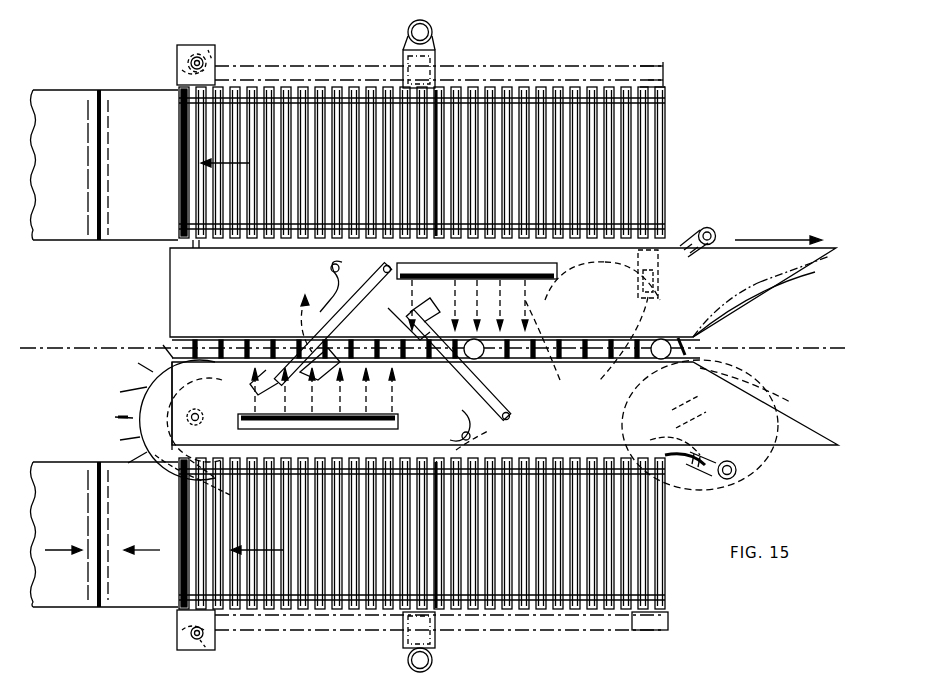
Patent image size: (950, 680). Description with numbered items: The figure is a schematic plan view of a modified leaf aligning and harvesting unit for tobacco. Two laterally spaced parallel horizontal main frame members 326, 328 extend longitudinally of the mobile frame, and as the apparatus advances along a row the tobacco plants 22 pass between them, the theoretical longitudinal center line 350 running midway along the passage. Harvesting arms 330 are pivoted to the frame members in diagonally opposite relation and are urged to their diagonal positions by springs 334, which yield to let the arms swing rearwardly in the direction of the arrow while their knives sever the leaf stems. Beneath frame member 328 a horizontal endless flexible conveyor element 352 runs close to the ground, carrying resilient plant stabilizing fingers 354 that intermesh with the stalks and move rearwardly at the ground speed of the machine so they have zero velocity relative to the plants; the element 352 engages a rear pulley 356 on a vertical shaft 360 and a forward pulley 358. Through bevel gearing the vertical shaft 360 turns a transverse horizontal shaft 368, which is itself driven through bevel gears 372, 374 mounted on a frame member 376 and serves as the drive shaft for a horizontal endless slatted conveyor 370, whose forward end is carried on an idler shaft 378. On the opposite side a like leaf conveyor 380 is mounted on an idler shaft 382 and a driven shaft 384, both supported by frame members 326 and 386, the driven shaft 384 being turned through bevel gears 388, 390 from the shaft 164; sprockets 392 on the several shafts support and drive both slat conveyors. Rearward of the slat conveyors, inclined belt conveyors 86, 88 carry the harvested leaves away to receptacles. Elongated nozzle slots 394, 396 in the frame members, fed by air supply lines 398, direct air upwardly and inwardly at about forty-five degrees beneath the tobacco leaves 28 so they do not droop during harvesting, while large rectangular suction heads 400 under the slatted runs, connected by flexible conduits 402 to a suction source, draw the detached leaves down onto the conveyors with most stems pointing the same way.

The tobacco plants 22 is at (700, 356).
The tobacco leaves 28 is at (780, 300).
The inclined belt conveyor 86 is at (191, 348).
The inclined belt conveyor 88 is at (105, 348).
The shaft 164 is at (195, 58).
The main frame member 326 is at (222, 296).
The main frame member 328 is at (160, 383).
The harvesting arm 330 is at (318, 345).
The spring 334 is at (452, 418).
The longitudinal center line 350 is at (58, 347).
The endless flexible conveyor element 352 is at (206, 358).
The plant stabilizing fingers 354 is at (118, 416).
The pulley 356 is at (160, 408).
The pulley 358 is at (750, 398).
The vertical shaft 360 is at (148, 456).
The transverse horizontal shaft 368 is at (192, 462).
The horizontal endless slatted conveyor 370 is at (612, 598).
The bevel gear 372 is at (182, 618).
The bevel gear 374 is at (196, 648).
The frame member 376 is at (392, 628).
The idler shaft 378 is at (688, 472).
The leaf conveyor 380 is at (604, 92).
The idler shaft 382 is at (666, 82).
The driven shaft 384 is at (190, 245).
The frame member 386 is at (283, 68).
The bevel gear 388 is at (208, 44).
The bevel gear 390 is at (183, 72).
The sprockets 392 is at (200, 232).
The nozzle slot 394 is at (540, 282).
The nozzle slot 396 is at (248, 440).
The air supply lines 398 is at (714, 230).
The suction head 400 is at (442, 110).
The flexible conduits 402 is at (432, 26).